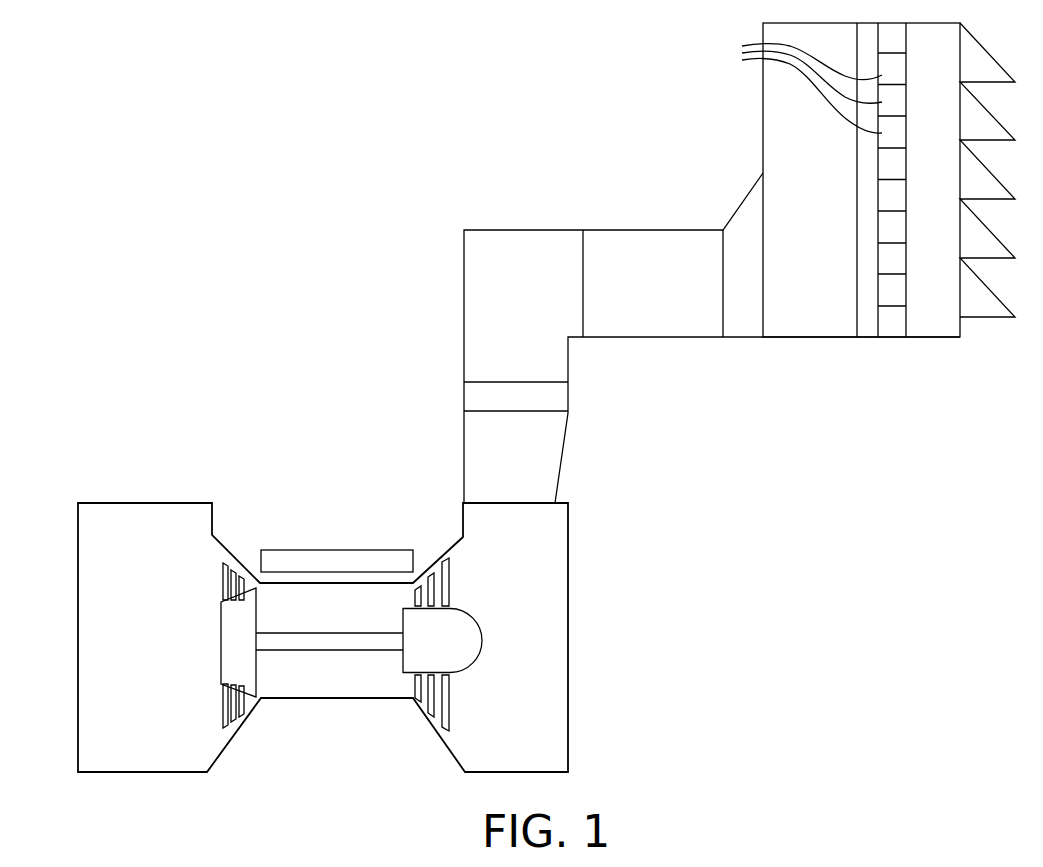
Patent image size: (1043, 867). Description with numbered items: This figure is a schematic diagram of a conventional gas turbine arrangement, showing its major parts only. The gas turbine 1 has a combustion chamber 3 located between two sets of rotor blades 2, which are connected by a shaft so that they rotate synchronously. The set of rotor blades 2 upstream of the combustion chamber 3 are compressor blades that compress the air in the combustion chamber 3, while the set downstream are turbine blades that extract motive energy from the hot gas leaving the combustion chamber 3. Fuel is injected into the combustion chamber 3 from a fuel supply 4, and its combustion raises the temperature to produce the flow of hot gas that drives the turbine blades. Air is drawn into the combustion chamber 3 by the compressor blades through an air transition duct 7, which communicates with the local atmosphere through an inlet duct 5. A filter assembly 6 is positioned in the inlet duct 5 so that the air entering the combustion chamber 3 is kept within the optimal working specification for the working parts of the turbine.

The gas turbine 1 is at (97, 512).
The rotor blades 2 is at (432, 702).
The combustion chamber 3 is at (335, 700).
The fuel supply 4 is at (280, 557).
The inlet duct 5 is at (892, 338).
The filter assembly 6 is at (804, 87).
The air transition duct 7 is at (563, 365).